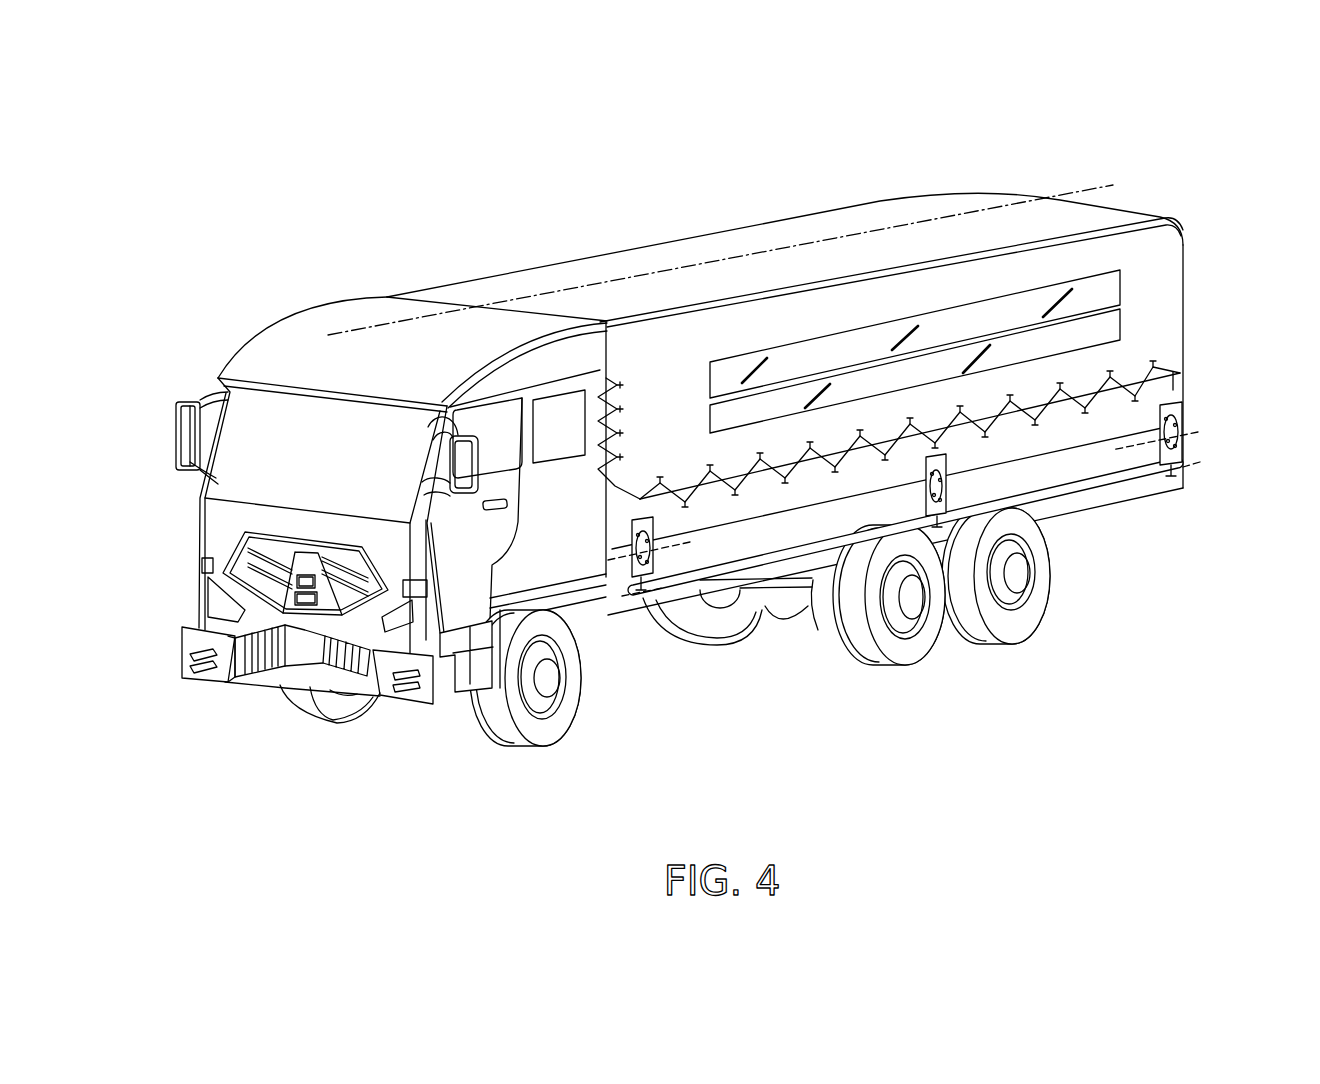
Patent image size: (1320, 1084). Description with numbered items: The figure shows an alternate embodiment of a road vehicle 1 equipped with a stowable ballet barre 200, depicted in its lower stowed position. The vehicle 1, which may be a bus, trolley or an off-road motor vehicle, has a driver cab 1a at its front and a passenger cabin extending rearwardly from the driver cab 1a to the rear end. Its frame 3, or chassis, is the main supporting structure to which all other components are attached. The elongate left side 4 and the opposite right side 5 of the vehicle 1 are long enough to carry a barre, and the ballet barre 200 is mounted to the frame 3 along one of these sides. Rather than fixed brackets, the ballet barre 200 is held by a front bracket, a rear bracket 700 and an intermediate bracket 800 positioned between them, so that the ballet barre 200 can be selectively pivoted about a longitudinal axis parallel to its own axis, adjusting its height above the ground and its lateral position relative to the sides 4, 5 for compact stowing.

The vehicle 1 is at (718, 424).
The driver cab 1a is at (548, 363).
The frame 3 is at (1152, 393).
The left side 4 is at (1155, 270).
The right side 5 is at (627, 252).
The ballet barre 200 is at (663, 580).
The rear bracket 700 is at (1184, 413).
The intermediate bracket 800 is at (946, 530).